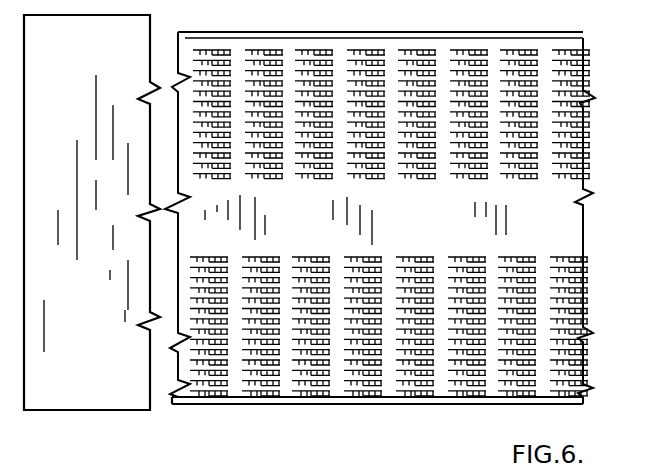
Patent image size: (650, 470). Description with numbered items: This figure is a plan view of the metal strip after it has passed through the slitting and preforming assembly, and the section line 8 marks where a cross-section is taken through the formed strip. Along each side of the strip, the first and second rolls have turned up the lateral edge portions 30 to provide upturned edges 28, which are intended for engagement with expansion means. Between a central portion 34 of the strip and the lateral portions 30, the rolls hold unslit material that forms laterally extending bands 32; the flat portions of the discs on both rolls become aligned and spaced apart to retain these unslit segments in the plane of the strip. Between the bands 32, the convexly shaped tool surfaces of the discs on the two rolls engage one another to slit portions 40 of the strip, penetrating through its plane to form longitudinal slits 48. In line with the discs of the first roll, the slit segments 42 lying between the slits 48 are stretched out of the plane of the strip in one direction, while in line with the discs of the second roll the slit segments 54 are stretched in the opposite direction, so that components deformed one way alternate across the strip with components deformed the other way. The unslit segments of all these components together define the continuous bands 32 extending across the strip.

The section line 8- 8 is at (213, 8).
The upturned edges 28 is at (359, 33).
The lateral edge portions 30 is at (420, 47).
The bands 32 is at (288, 58).
The central portion 34 is at (562, 233).
The slit portions 40 is at (467, 100).
The slit segments 42 is at (317, 54).
The slits 48 is at (430, 365).
The slit segments 54 is at (355, 367).